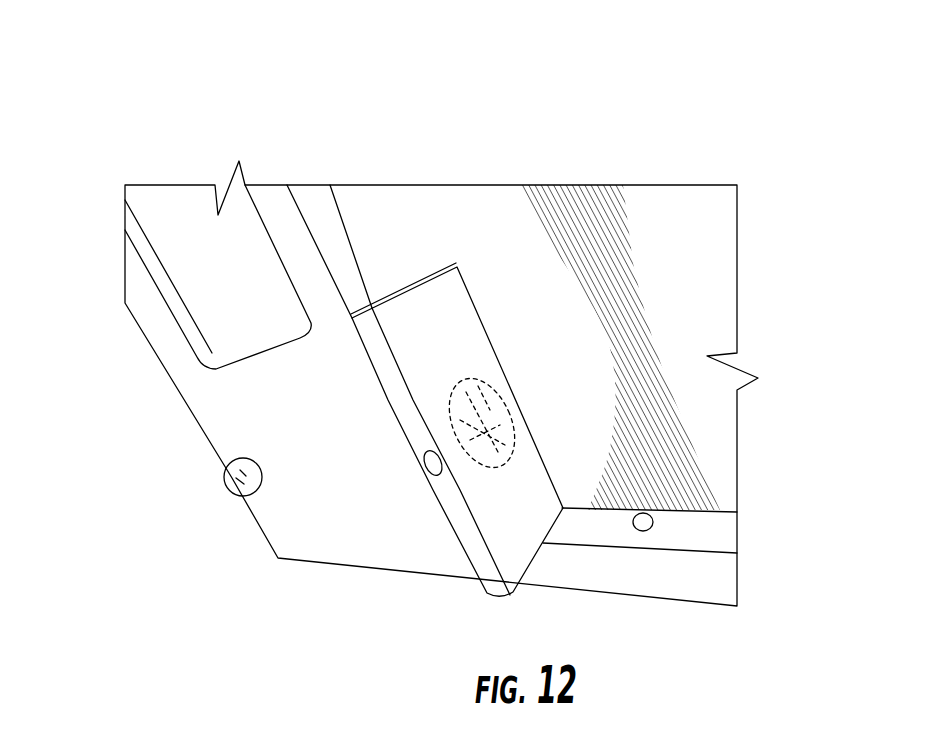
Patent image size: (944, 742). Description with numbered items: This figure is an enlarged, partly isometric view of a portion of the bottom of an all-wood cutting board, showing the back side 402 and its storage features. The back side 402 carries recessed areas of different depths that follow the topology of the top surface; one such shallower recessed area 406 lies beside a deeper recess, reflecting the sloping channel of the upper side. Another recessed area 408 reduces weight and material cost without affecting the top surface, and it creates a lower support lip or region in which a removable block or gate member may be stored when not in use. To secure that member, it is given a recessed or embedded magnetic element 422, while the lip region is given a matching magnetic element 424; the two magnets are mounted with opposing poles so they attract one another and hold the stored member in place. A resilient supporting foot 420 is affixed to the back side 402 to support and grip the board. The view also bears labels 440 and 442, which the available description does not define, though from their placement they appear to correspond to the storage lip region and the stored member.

The back side 402 is at (374, 521).
The recessed area 406 is at (198, 323).
The recessed area 408 is at (334, 245).
The supporting foot 420 is at (231, 492).
The magnetic element 422 is at (430, 474).
The magnetic element 424 is at (651, 531).
The ledge 440 is at (711, 530).
The card 442 is at (427, 356).